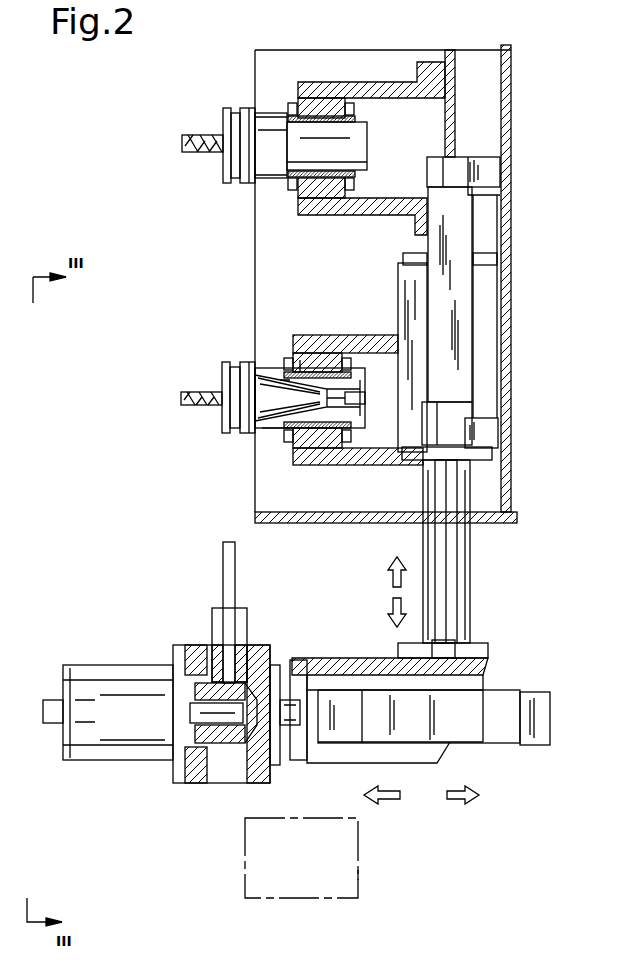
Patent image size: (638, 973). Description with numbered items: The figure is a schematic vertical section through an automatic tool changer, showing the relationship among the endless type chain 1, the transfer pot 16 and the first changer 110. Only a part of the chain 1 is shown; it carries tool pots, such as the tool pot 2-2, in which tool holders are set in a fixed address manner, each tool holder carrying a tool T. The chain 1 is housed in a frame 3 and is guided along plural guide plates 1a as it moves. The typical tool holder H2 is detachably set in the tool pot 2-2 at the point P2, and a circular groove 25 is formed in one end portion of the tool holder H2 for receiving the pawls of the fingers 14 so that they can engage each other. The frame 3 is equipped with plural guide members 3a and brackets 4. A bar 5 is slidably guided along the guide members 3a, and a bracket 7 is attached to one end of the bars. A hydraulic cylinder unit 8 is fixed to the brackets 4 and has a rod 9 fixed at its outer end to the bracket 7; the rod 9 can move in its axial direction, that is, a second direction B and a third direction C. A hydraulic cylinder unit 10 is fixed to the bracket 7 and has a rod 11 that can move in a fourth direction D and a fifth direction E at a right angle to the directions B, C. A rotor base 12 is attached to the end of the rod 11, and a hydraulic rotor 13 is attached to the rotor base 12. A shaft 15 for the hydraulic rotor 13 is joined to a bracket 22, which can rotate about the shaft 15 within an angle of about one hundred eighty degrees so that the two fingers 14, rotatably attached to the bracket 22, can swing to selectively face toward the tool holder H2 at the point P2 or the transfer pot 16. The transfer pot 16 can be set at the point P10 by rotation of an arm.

The endless type chain 1 is at (384, 146).
The guide plates 1a is at (385, 82).
The tool pot 2-2 is at (316, 360).
The frame 3 is at (511, 125).
The guide members 3a is at (492, 356).
The brackets 4 is at (494, 180).
The bar 5 is at (470, 548).
The bracket 7 is at (489, 671).
The hydraulic cylinder unit 8 is at (468, 228).
The rod 9 is at (447, 584).
The hydraulic cylinder unit 10 is at (496, 740).
The rod 11 is at (290, 742).
The rotor base 12 is at (196, 780).
The hydraulic rotor 13 is at (120, 755).
The fingers 14 is at (224, 578).
The shaft 15 is at (190, 705).
The transfer pot 16 is at (358, 848).
The bracket 22 is at (212, 620).
The circular groove 25 is at (240, 425).
The first changer 110 is at (143, 632).
The tool holder H2 is at (268, 362).
The point P2 is at (266, 436).
The point P10 is at (362, 879).
The tool T is at (183, 152).
The second direction B is at (388, 582).
The third direction C is at (388, 614).
The fourth direction D is at (392, 799).
The fifth direction E is at (455, 799).